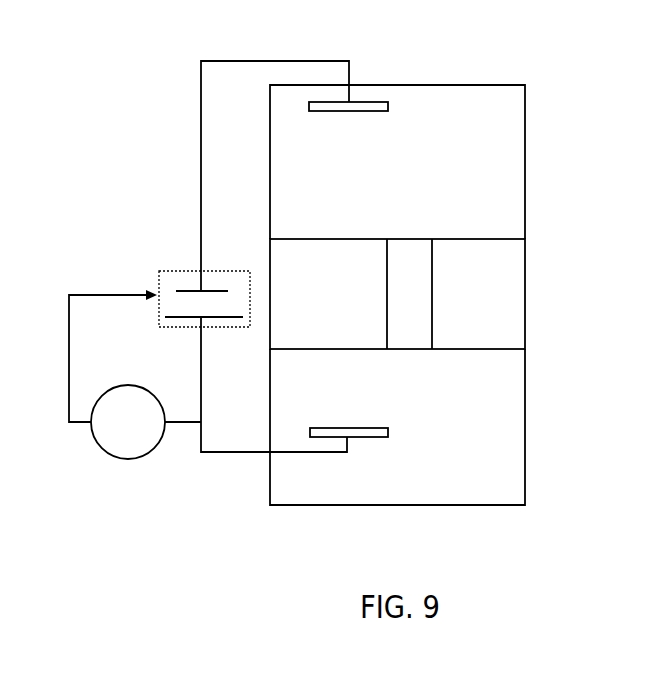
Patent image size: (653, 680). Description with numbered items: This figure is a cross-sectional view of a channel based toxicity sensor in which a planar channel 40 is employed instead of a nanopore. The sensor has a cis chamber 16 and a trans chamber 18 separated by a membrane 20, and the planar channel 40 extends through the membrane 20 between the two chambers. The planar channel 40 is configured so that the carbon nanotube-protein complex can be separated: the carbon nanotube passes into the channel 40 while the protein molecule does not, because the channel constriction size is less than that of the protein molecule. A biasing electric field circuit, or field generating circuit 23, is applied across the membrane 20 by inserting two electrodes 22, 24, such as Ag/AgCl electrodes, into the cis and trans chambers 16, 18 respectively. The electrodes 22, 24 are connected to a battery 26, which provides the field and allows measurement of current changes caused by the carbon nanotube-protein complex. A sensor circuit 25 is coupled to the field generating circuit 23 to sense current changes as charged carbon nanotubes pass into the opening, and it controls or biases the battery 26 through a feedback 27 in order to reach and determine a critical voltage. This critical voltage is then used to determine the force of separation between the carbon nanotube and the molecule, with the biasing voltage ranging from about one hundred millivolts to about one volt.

The cis chamber 16 is at (510, 183).
The trans chamber 18 is at (510, 415).
The membrane 20 is at (510, 320).
The electrode 22 is at (368, 101).
The field generating circuit 23 is at (194, 171).
The electrode 24 is at (318, 428).
The sensor circuit 25 is at (121, 459).
The battery 26 is at (201, 291).
The feedback 27 is at (69, 352).
The planar channel 40 is at (410, 253).